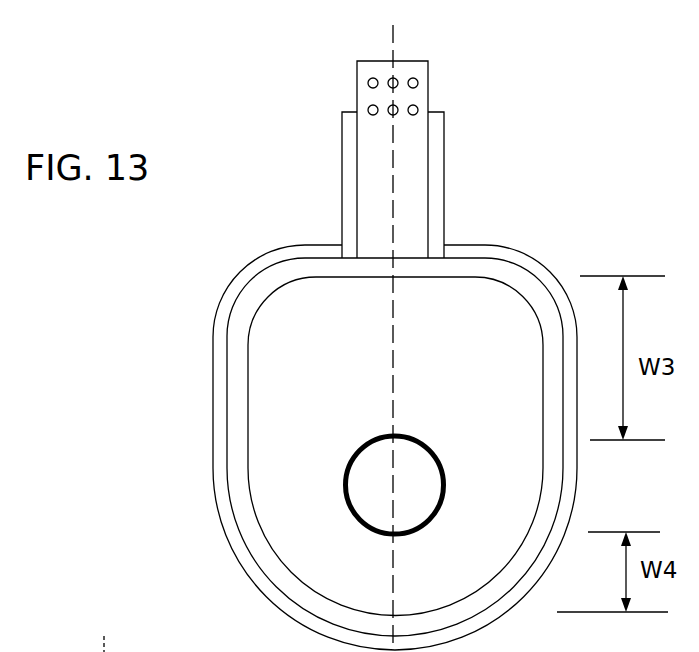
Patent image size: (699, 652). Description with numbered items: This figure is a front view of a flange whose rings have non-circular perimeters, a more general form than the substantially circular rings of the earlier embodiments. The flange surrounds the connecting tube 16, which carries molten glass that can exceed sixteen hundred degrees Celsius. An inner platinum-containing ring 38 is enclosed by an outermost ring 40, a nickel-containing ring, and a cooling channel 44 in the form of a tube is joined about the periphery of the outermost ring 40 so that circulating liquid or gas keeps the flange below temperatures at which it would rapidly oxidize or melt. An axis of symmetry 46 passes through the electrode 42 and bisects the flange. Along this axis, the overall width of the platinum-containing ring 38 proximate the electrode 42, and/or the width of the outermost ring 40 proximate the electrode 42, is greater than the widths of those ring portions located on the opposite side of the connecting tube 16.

The connecting tube 16 is at (334, 496).
The platinum-containing ring 38 is at (268, 393).
The outermost ring 40 is at (242, 327).
The electrode 42 is at (428, 65).
The cooling channel 44 is at (220, 521).
The axis of symmetry 46 is at (390, 45).